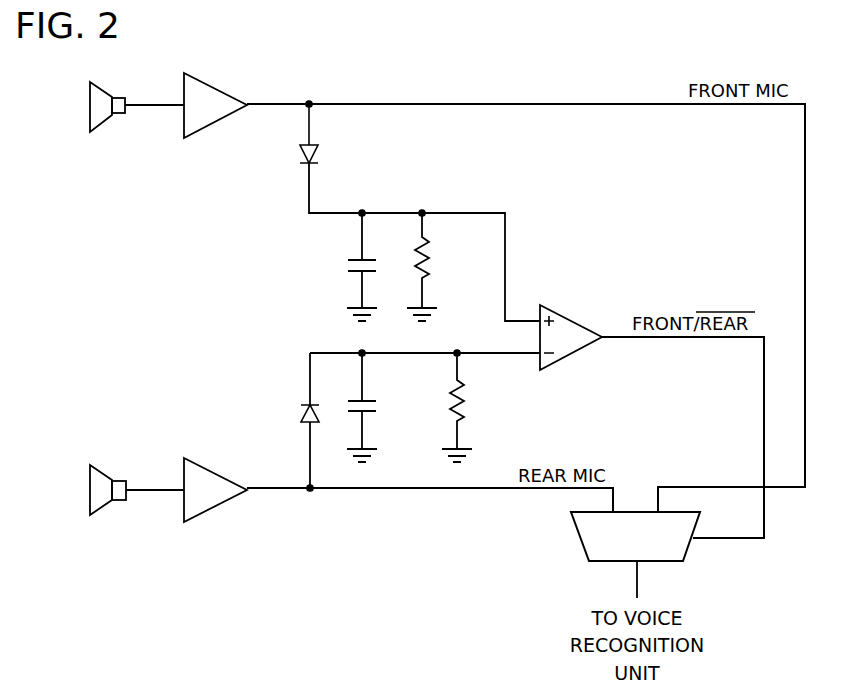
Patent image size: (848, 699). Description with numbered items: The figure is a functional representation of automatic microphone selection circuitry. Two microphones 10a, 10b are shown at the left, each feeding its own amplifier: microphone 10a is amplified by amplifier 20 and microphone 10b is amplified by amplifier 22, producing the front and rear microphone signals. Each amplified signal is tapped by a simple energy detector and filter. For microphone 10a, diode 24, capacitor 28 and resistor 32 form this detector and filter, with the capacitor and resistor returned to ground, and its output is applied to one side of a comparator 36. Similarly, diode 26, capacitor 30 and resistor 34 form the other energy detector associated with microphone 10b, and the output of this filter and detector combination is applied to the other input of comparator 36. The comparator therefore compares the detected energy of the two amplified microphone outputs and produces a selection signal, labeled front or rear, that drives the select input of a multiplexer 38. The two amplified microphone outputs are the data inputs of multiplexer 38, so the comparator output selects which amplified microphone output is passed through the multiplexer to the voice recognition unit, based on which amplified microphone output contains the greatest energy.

The microphone 10a is at (88, 103).
The microphone 10b is at (88, 491).
The amplifier 20 is at (204, 83).
The amplifier 22 is at (208, 512).
The diode 24 is at (319, 154).
The diode 26 is at (300, 413).
The capacitor 28 is at (347, 264).
The capacitor 30 is at (377, 405).
The resistor 32 is at (432, 252).
The resistor 34 is at (467, 394).
The comparator 36 is at (555, 308).
The multiplexer 38 is at (581, 542).